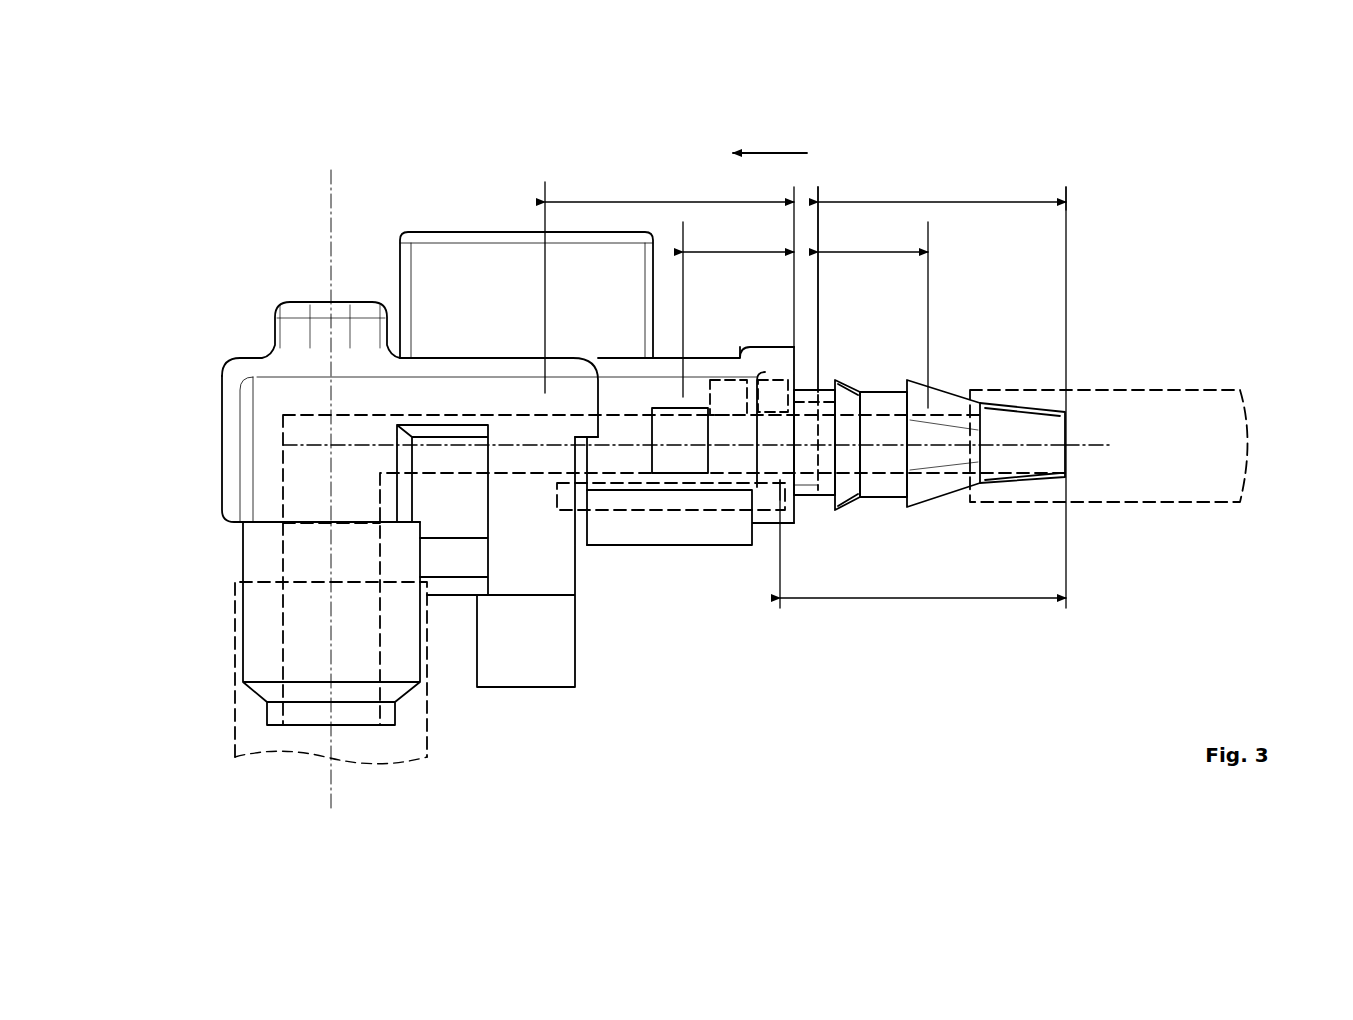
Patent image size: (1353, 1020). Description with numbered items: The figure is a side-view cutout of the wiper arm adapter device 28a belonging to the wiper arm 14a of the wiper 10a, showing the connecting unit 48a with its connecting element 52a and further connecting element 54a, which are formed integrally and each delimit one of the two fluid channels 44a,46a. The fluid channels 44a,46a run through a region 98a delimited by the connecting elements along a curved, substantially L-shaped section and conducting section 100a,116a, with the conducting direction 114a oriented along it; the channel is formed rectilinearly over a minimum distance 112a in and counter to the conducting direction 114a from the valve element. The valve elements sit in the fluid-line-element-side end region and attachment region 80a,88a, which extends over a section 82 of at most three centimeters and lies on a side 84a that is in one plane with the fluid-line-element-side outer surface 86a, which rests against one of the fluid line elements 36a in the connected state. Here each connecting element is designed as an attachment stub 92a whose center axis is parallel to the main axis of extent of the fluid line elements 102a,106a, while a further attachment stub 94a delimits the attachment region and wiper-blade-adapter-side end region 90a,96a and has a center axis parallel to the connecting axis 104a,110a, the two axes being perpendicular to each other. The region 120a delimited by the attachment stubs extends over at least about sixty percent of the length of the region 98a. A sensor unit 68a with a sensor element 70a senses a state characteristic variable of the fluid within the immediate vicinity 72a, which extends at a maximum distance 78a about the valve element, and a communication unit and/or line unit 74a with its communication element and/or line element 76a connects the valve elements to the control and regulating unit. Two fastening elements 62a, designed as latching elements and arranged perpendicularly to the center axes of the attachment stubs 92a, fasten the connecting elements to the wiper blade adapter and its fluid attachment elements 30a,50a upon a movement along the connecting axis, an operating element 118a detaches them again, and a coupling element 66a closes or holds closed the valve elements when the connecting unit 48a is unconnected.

The wiper 10a is at (1250, 140).
The wiper arm 14a is at (1180, 143).
The wiper arm adapter device 28a is at (1118, 150).
The wiper blade adapter and fluid attachment elements 30a,50a is at (427, 757).
The fluid line elements 36a is at (1180, 505).
The fluid channels 44a,46a is at (830, 395).
The connecting unit 48a is at (716, 148).
The connecting element 52a is at (422, 363).
The further connecting element 54a is at (455, 367).
The fastening elements 62a is at (548, 668).
The coupling element 66a is at (735, 510).
The sensor unit 68a is at (830, 165).
The sensor element 70a is at (775, 380).
The immediate vicinity 72a is at (688, 398).
The communication unit and/or line unit 74a is at (783, 652).
The communication element and/or line element 76a is at (728, 380).
The maximum distance 78a is at (740, 250).
The fluid-line-element-side end region and attachment region 80a,88a is at (977, 518).
The section 82 is at (937, 600).
The side 84a is at (1215, 443).
The fluid-line-element-side outer surface 86a is at (1073, 420).
The attachment region and wiper-blade-adapter-side end region 90a,96a is at (230, 630).
The attachment stub 92a is at (947, 400).
The further attachment stub 94a is at (300, 665).
The region of the fluid channels 98a is at (295, 478).
The section and conducting section 100a,116a is at (367, 443).
The center axis and main axis of extent 102a,106a is at (1093, 445).
The center axis and connecting axis 104a,110a is at (331, 800).
The minimum distance 112a is at (660, 195).
The conducting direction 114a is at (777, 148).
The operating element 118a is at (505, 287).
The region delimited by attachment stubs 120a is at (300, 545).